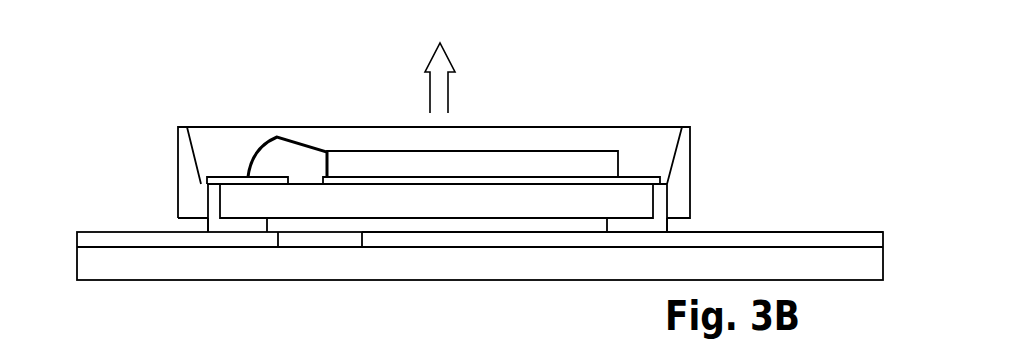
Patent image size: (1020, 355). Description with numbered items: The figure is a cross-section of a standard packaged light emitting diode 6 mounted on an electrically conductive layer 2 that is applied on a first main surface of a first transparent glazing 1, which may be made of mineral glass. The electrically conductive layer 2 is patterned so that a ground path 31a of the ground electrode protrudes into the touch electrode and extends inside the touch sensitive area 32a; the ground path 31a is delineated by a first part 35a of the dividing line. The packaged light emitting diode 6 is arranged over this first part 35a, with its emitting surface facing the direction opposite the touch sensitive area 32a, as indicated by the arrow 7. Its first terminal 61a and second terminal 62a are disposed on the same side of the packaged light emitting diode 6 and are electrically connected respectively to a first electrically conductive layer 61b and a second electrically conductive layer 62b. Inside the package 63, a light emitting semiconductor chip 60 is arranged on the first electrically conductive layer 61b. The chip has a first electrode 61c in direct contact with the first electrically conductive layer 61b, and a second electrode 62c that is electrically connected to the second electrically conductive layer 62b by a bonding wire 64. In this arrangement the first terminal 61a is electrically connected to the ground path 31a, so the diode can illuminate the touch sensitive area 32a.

The first transparent glazing 1 is at (132, 265).
The electrically conductive layer 2 is at (82, 238).
The ground path 31a is at (798, 240).
The touch sensitive area 32a is at (122, 238).
The first part of the dividing line 35a is at (325, 238).
The packaged light emitting diode 6 is at (648, 115).
The light emitting semiconductor chip 60 is at (475, 163).
The first terminal 61a is at (630, 224).
The first electrically conductive layer 61b is at (512, 181).
The first electrode 61c is at (448, 178).
The second terminal 62a is at (243, 226).
The second electrically conductive layer 62b is at (215, 181).
The second electrode 62c is at (380, 138).
The package 63 is at (677, 185).
The bonding wire 64 is at (277, 135).
The light emission direction arrow 7 is at (430, 93).